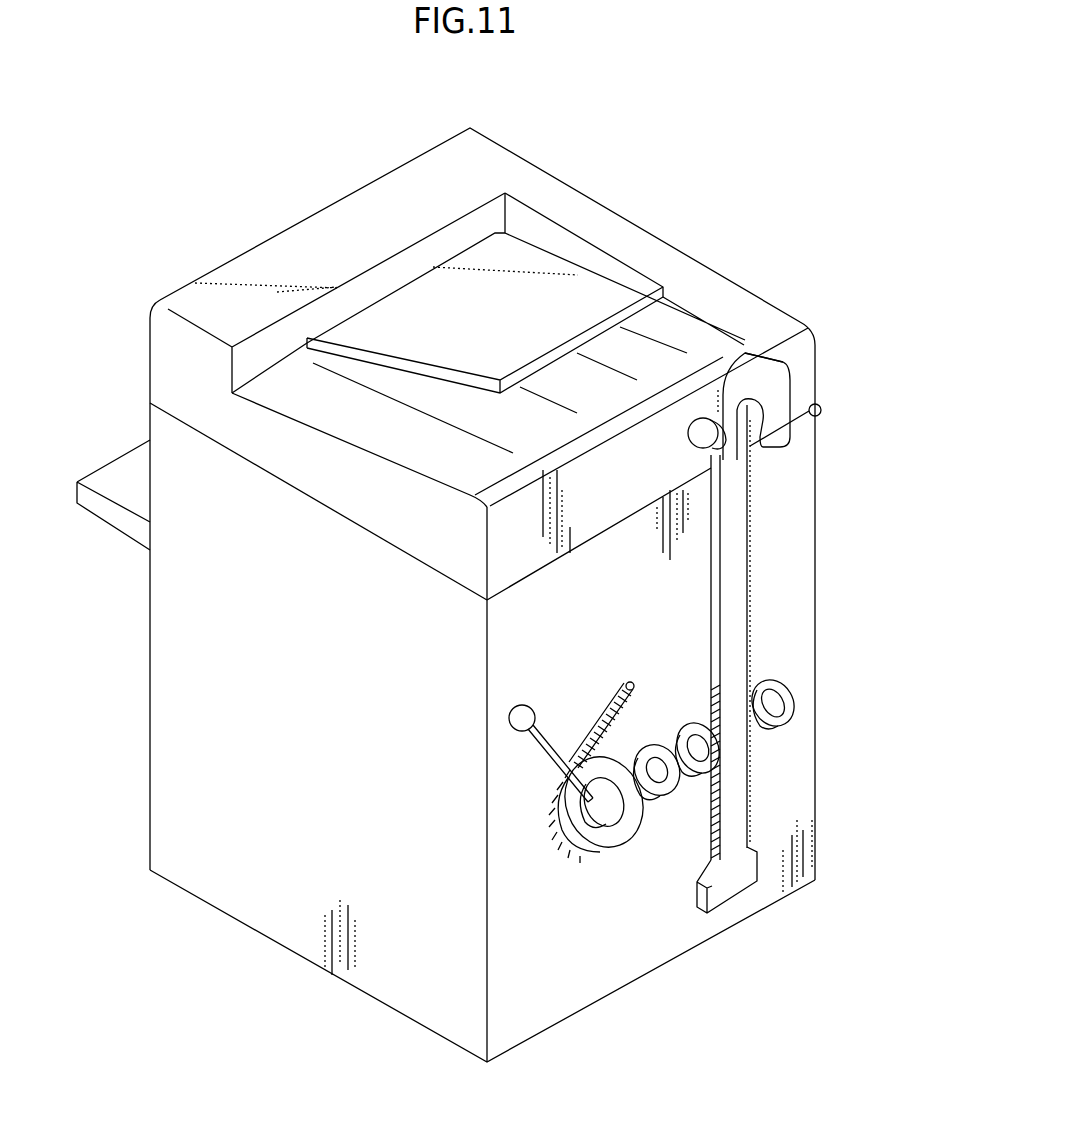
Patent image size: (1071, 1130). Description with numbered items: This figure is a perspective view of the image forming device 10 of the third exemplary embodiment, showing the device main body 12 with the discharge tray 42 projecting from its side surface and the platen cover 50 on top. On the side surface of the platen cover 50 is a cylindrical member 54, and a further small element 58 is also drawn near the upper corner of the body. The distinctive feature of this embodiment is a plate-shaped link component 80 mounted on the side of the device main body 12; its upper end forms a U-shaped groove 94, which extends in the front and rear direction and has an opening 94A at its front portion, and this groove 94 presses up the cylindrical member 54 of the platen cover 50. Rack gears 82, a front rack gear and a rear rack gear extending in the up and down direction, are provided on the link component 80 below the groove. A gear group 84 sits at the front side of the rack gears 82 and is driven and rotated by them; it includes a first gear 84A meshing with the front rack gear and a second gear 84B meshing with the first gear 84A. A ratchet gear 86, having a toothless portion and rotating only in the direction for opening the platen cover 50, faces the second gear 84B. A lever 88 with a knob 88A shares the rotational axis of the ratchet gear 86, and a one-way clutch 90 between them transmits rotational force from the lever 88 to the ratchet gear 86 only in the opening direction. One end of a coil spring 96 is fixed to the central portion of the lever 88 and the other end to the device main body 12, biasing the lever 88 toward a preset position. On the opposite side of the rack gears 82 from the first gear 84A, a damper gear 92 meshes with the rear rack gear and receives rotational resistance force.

The image forming apparatus 10 is at (850, 182).
The device main body 12 is at (178, 667).
The discharge tray 42 is at (97, 512).
The platen cover 50 is at (327, 227).
The cylindrical member 54 is at (695, 440).
The screw 58 is at (822, 404).
The link component 80 is at (730, 543).
The rack gears 82 is at (707, 820).
The gear group 84 is at (658, 678).
The first gear 84A is at (693, 720).
The second gear 84B is at (648, 742).
The ratchet gear 86 is at (601, 822).
The lever 88 is at (568, 770).
The knob 88A is at (530, 706).
The one-way clutch 90 is at (573, 847).
The damper gear 92 is at (773, 680).
The U-shaped groove 94 is at (757, 463).
The opening 94A is at (760, 343).
The coil spring 96 is at (583, 727).